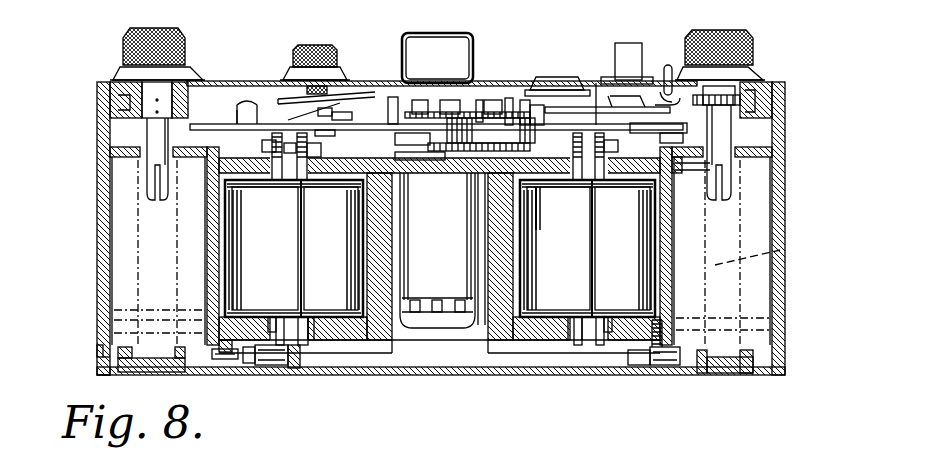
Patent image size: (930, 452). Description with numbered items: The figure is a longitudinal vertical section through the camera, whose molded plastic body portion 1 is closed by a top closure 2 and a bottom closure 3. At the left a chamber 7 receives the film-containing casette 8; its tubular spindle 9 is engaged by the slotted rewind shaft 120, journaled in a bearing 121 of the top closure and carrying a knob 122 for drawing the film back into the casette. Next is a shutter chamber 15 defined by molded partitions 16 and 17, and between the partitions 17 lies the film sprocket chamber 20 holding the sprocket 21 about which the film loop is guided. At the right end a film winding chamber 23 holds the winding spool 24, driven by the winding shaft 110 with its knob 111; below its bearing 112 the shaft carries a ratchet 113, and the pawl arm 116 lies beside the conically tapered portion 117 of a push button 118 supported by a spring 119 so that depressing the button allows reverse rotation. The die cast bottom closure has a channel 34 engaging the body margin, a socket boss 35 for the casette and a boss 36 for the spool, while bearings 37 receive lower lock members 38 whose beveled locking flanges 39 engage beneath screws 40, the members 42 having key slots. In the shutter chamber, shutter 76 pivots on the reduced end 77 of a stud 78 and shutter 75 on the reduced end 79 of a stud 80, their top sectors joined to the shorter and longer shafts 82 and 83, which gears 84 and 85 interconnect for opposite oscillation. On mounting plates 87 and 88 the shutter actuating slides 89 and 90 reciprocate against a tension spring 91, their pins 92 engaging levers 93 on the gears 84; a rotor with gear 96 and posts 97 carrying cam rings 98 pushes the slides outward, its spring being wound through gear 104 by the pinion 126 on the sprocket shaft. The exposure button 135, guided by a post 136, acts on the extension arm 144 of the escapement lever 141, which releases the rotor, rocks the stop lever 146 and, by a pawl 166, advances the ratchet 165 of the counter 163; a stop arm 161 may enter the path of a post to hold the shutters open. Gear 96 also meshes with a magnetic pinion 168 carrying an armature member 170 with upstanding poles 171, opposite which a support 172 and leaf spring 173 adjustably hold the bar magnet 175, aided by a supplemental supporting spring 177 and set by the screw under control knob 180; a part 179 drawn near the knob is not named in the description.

The body portion 1 is at (100, 215).
The top closure 2 is at (112, 90).
The bottom closure 3 is at (97, 352).
The casette-receiving chamber 7 is at (100, 240).
The film-containing casette 8 is at (118, 265).
The tubular spindle 9 is at (118, 283).
The shutter chamber 15 is at (355, 340).
The partition 16 is at (213, 297).
The partition 17 is at (380, 312).
The film sprocket chamber 20 is at (478, 330).
The sprocket 21 is at (445, 318).
The film winding chamber 23 is at (780, 290).
The winding spool 24 is at (773, 252).
The channel 34 is at (100, 360).
The socket boss 35 is at (158, 353).
The boss 36 is at (730, 362).
The bearings 37 is at (305, 350).
The lower lock members 38 is at (295, 368).
The beveled locking flanges 39 is at (249, 363).
The screws 40 is at (222, 360).
The members of the locking rotors 42 is at (276, 366).
The shutter 75 is at (440, 248).
The shutter 76 is at (447, 248).
The reduced end 77 is at (303, 318).
The stud 78 is at (316, 318).
The reduced end 79 is at (280, 317).
The stud 80 is at (273, 318).
The shutter control shaft 82 is at (305, 178).
The shutter control shaft 83 is at (272, 178).
The gear 84 is at (310, 148).
The gear 85 is at (262, 143).
The mounting plate 87 is at (210, 124).
The mounting plate 88 is at (672, 138).
The shutter actuating slide 89 is at (370, 140).
The shutter actuating slide 90 is at (600, 113).
The tension spring 91 is at (394, 97).
The pins 92 is at (342, 112).
The levers 93 is at (330, 134).
The gear 96 is at (509, 98).
The posts 97 is at (490, 100).
The cam rings 98 is at (479, 100).
The gear 104 is at (470, 135).
The winding shaft 110 is at (740, 166).
The knob 111 is at (755, 50).
The bearing 112 is at (780, 95).
The ratchet 113 is at (773, 108).
The arm 116 is at (697, 95).
The conically tapered portion 117 is at (665, 92).
The push button 118 is at (668, 65).
The spring 119 is at (665, 105).
The rewind shaft 120 is at (150, 140).
The bearing 121 is at (125, 100).
The knob 122 is at (120, 50).
The pinion 126 is at (428, 151).
The exposure button 135 is at (630, 45).
The post 136 is at (670, 190).
The escapement lever 141 is at (526, 100).
The extension arm 144 is at (700, 167).
The stop lever 146 is at (540, 225).
The stop arm 161 is at (536, 105).
The counter 163 is at (560, 77).
The ratchet 165 is at (575, 90).
The pawl 166 is at (596, 83).
The pinion 168 is at (430, 132).
The armature member 170 is at (420, 100).
The upstanding poles 171 is at (450, 100).
The support 172 is at (236, 118).
The leaf spring 173 is at (248, 104).
The bar magnet 175 is at (360, 98).
The supplemental supporting spring 177 is at (325, 110).
The knob flange 179 is at (315, 82).
The control knob 180 is at (325, 60).